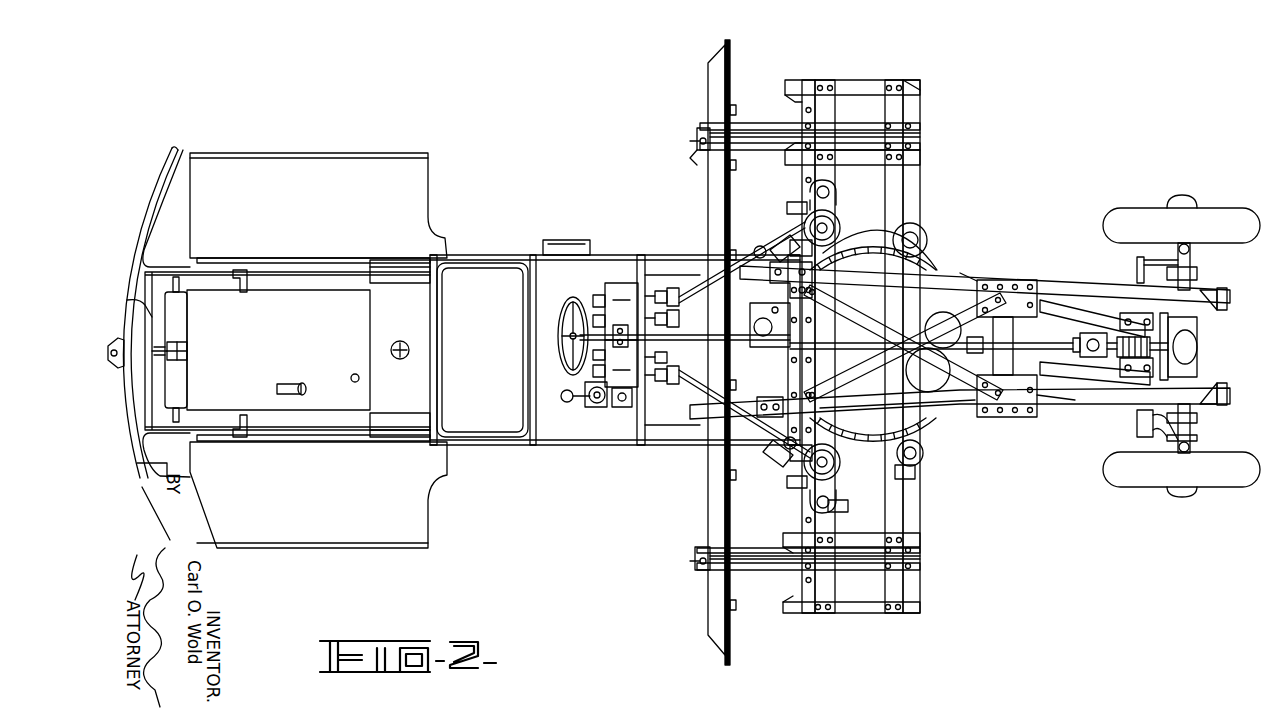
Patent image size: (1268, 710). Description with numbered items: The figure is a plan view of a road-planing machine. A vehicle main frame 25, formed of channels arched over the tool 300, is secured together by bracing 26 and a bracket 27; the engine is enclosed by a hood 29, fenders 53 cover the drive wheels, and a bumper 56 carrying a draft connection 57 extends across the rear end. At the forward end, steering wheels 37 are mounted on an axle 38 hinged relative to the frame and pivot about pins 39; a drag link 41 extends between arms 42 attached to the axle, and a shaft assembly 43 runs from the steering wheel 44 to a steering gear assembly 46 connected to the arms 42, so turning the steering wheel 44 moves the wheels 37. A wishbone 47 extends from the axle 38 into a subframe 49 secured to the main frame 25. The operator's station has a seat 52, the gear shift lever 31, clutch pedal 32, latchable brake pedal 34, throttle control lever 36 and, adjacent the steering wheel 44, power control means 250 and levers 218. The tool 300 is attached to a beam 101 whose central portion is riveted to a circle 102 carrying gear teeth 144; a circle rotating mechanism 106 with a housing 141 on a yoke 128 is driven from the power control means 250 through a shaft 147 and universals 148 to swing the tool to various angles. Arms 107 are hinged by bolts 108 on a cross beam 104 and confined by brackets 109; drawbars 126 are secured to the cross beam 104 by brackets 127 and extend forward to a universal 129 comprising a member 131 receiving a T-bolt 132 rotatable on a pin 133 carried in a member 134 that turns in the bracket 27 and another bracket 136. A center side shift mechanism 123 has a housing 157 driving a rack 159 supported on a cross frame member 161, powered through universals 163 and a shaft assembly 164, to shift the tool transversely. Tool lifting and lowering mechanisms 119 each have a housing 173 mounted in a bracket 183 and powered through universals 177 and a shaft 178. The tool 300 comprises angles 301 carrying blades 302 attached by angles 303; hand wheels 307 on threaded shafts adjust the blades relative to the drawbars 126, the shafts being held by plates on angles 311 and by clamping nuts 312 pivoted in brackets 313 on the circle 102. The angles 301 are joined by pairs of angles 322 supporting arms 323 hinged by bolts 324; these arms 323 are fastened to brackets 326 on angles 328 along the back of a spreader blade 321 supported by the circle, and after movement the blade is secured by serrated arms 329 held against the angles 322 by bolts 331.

The vehicle main frame 25 is at (1093, 403).
The bracing 26 is at (1040, 300).
The bracket 27 is at (1222, 290).
The hood 29 is at (298, 358).
The gear shift lever 31 is at (563, 398).
The clutch pedal 32 is at (587, 382).
The pedal 34 is at (593, 298).
The throttle control lever 36 is at (613, 283).
The steering wheels 37 is at (1231, 233).
The axle 38 is at (1197, 420).
The pins 39 is at (1200, 447).
The drag link 41 is at (1137, 420).
The arms 42 is at (1167, 437).
The shaft assembly 43 is at (1053, 305).
The steering wheel 44 is at (560, 323).
The steering gear assembly 46 is at (1075, 400).
The wishbone 47 is at (1117, 317).
The subframe 49 is at (1050, 395).
The seat 52 is at (488, 309).
The fenders 53 is at (345, 165).
The bumper 56 is at (162, 178).
The draft connection 57 is at (110, 335).
The beam 101 is at (915, 227).
The circle 102 is at (867, 247).
The cross beam 104 is at (805, 510).
The circle rotating mechanism 106 is at (913, 373).
The arms 107 is at (802, 197).
The bolts 108 is at (823, 403).
The brackets 109 is at (800, 212).
The tool lifting and lowering mechanisms 119 is at (836, 208).
The center side shift mechanism 123 is at (712, 270).
The drawbars 126 is at (1062, 320).
The brackets 127 is at (830, 217).
The yoke 128 is at (960, 273).
The universal 129 is at (1207, 333).
The member 131 is at (1133, 313).
The T-bolt 132 is at (1150, 313).
The pin 133 is at (1197, 367).
The member 134 is at (1195, 280).
The bracket 136 is at (1195, 347).
The housing 141 is at (897, 416).
The gear teeth 144 is at (907, 473).
The shaft 147 is at (931, 345).
The universals 148 is at (920, 300).
The housing 157 is at (690, 385).
The rack 159 is at (712, 400).
The cross frame member 161 is at (777, 350).
The universals 163 is at (685, 318).
The shaft assembly 164 is at (688, 300).
The housing 173 is at (848, 507).
The universals 177 is at (665, 395).
The shaft 178 is at (655, 420).
The bracket 183 is at (782, 242).
The levers 218 is at (593, 353).
The power control means 250 is at (625, 408).
The tool 300 is at (920, 606).
The angles 301 is at (820, 612).
The blades 302 is at (877, 80).
The angles 303 is at (843, 148).
The hand wheels 307 is at (950, 240).
The angles 311 is at (920, 590).
The clamping nuts 312 is at (925, 458).
The brackets 313 is at (960, 237).
The spreader blade 321 is at (730, 633).
The pairs of angles 322 is at (772, 147).
The arms 323 is at (873, 137).
The bolts 324 is at (883, 130).
The brackets 326 is at (707, 150).
The angles 328 is at (713, 637).
The serrated arms 329 is at (703, 140).
The bolts 331 is at (703, 152).